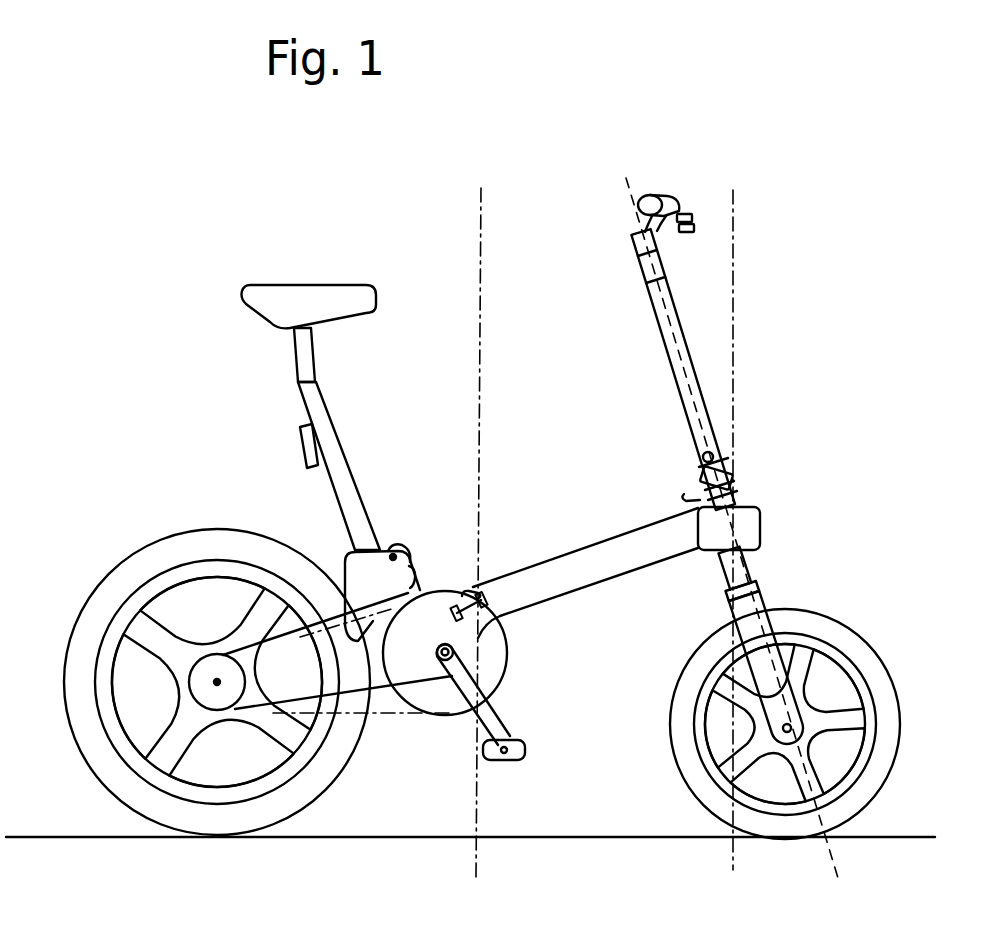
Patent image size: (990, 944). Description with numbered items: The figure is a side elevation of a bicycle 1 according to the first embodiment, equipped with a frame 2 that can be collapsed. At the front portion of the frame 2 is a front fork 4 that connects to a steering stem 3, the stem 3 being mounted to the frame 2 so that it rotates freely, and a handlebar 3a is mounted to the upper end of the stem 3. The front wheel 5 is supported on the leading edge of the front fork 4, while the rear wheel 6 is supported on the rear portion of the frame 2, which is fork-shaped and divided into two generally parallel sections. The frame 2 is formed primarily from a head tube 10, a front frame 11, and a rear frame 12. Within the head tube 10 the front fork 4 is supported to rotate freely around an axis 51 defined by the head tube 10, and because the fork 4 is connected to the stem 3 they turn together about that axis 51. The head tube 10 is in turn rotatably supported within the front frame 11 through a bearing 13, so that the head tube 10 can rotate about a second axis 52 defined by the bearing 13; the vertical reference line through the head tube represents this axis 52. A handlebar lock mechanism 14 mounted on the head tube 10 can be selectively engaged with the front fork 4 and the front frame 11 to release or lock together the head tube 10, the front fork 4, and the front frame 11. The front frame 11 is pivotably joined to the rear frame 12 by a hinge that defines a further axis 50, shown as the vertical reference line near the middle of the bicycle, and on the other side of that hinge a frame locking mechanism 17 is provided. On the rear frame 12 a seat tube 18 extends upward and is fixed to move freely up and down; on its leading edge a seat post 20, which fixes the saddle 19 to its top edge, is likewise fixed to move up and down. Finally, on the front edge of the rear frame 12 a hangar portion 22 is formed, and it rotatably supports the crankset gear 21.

The bicycle 1 is at (838, 303).
The frame 2 is at (548, 520).
The steering stem 3 is at (700, 364).
The handlebar 3a is at (677, 210).
The front fork 4 is at (770, 612).
The front wheel 5 is at (862, 653).
The rear wheel 6 is at (330, 765).
The head tube 10 is at (743, 484).
The front frame 11 is at (607, 567).
The rear frame 12 is at (362, 675).
The bearing 13 is at (762, 504).
The handlebar lock mechanism 14 is at (670, 468).
The frame locking mechanism 17 is at (463, 575).
The seat tube 18 is at (355, 503).
The saddle 19 is at (358, 297).
The seat post 20 is at (305, 362).
The crankset gear 21 is at (495, 718).
The hangar portion 22 is at (472, 649).
The axis 50 is at (481, 200).
The axis 51 is at (624, 184).
The axis 52 is at (733, 314).